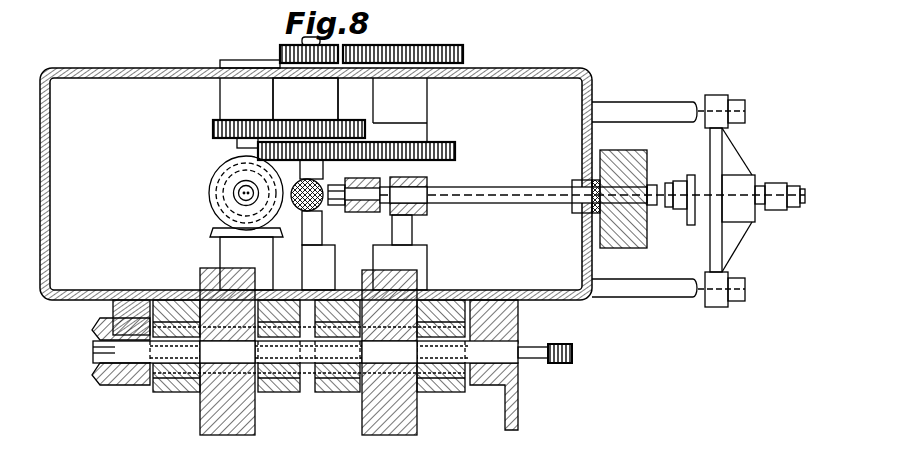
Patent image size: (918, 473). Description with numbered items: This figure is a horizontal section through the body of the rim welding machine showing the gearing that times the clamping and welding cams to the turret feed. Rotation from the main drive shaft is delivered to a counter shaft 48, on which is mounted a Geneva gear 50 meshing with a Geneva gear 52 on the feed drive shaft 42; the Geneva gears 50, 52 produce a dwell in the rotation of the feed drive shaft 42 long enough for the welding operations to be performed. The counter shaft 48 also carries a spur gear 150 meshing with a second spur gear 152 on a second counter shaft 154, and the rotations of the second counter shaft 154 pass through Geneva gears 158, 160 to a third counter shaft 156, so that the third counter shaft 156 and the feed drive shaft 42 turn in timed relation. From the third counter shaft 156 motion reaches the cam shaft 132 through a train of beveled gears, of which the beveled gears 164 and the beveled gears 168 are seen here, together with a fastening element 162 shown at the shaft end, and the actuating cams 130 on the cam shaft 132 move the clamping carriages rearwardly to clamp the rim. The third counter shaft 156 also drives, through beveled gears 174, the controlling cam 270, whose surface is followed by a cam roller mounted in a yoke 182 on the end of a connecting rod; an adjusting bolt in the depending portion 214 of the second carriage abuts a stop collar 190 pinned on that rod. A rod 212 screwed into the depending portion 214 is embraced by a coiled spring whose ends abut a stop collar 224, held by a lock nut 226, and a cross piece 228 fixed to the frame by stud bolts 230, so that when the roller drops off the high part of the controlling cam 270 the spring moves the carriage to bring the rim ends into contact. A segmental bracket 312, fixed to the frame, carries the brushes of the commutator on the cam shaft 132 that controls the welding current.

The feed drive shaft 42 is at (300, 41).
The Geneva gear 52 is at (278, 53).
The Geneva gear 50 is at (421, 45).
The Geneva gear 158 is at (317, 119).
The Geneva gear 160 is at (218, 124).
The third counter shaft 156 is at (235, 146).
The spur gear 150 is at (439, 142).
The second spur gear 152 is at (319, 161).
The controlling cam 270 is at (216, 183).
The beveled gears 174 is at (226, 197).
The second counter shaft 154 is at (314, 234).
The nut 162 is at (384, 178).
The beveled gears 164 is at (448, 200).
The yoke 182 is at (408, 196).
The counter shaft 48 is at (412, 230).
The stop collar 190 is at (577, 211).
The depending portion 214 is at (615, 170).
The lock nut 226 is at (675, 184).
The stop collar 224 is at (691, 227).
The stud bolts 230 is at (677, 84).
The cross piece 228 is at (738, 183).
The rod 212 is at (759, 188).
The segmental bracket 312 is at (546, 390).
The cam shaft 132 is at (308, 353).
The beveled gears 168 is at (96, 370).
The actuating cams 130 is at (233, 433).